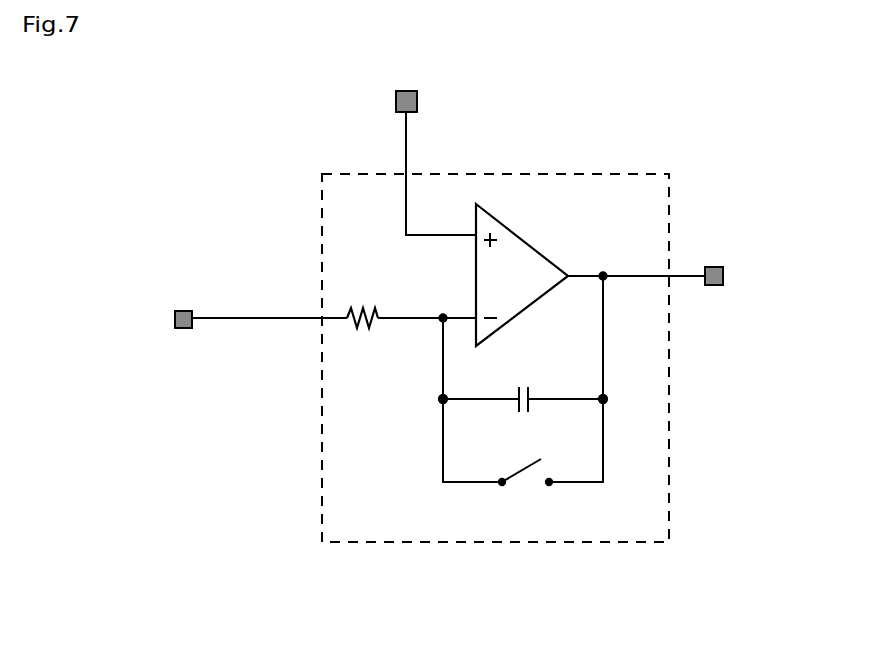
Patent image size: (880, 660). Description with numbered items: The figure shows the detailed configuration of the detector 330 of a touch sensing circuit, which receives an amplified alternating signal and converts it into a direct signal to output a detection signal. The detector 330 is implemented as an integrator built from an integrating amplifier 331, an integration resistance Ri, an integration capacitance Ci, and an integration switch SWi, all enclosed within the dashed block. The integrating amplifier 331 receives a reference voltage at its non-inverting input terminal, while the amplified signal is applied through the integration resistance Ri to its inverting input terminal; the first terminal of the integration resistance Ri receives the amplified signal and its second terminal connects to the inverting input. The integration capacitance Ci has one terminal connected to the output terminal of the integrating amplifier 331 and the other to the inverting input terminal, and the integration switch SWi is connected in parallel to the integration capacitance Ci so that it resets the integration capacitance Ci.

The detector 330 is at (492, 542).
The integrating amplifier 331 is at (534, 246).
The integration resistance Ri is at (362, 335).
The integration capacitance Ci is at (523, 414).
The integration switch SWi is at (527, 489).